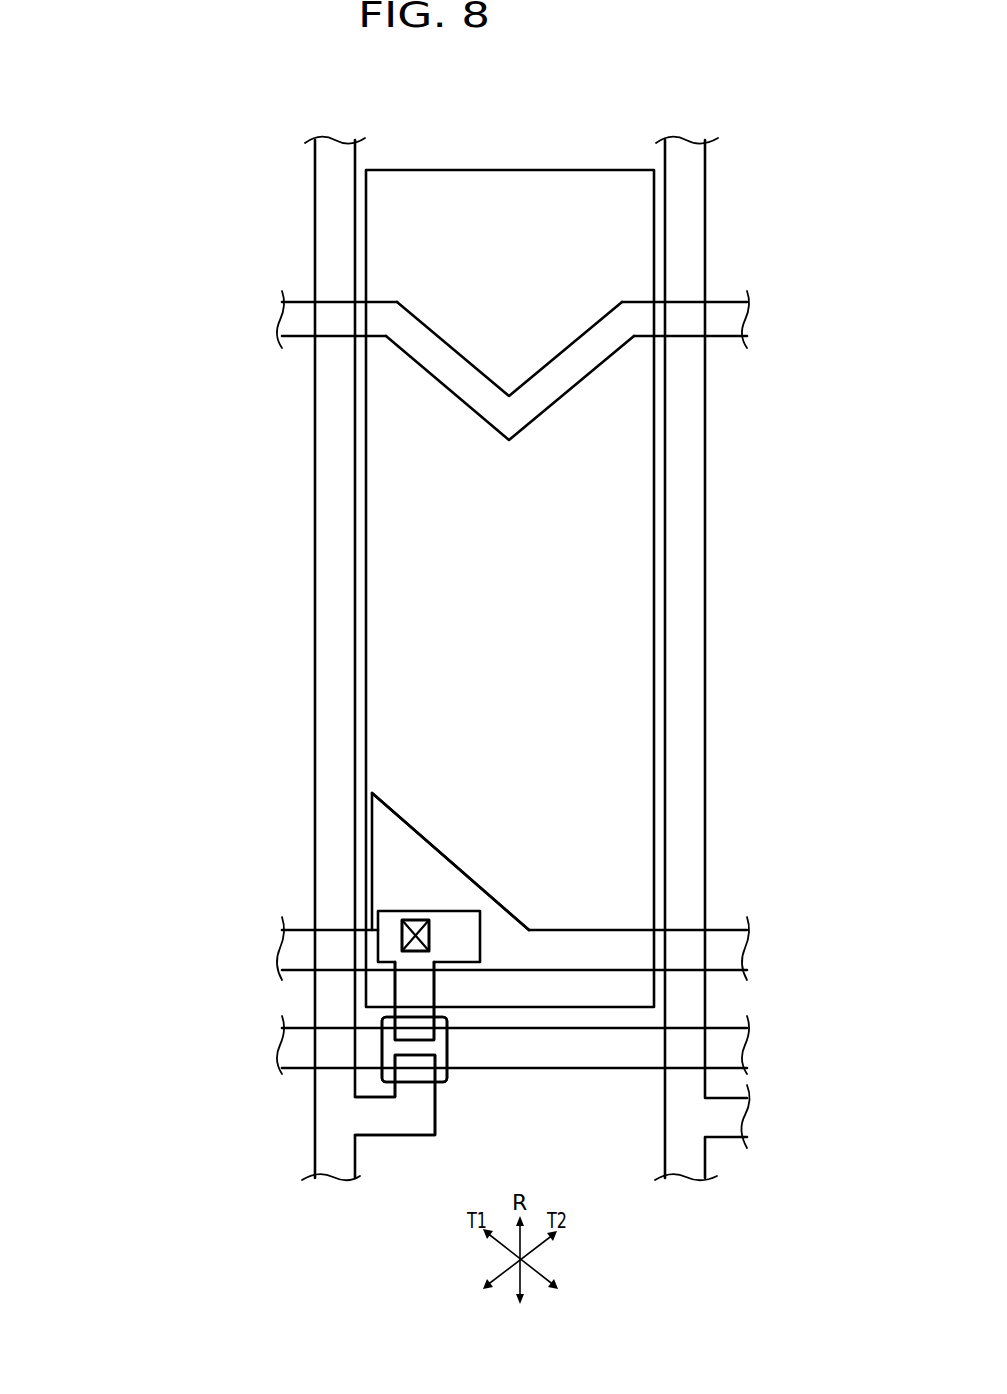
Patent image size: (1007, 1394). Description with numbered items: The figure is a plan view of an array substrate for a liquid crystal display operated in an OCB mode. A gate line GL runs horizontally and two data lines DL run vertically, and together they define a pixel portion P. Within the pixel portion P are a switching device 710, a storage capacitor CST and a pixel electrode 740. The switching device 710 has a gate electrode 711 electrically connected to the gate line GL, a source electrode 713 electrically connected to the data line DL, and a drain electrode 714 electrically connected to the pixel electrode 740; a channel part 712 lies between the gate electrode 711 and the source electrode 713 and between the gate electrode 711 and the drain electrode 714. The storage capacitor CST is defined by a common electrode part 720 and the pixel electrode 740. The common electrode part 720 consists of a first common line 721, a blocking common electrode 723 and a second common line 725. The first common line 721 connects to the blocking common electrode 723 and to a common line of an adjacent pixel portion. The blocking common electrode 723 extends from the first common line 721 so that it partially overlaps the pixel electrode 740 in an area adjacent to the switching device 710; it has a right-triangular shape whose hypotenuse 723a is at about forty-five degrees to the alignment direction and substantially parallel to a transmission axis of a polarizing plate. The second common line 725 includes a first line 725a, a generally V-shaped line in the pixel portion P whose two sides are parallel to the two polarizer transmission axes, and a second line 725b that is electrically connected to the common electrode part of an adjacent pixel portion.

The pixel electrode 740 is at (428, 239).
The storage capacitor CST is at (88, 668).
The common electrode part 720 is at (148, 345).
The second common line 725 is at (205, 312).
The first line 725a is at (462, 387).
The second line 725b is at (293, 318).
The blocking common electrode 723 is at (362, 916).
The hypotenuse 723a is at (467, 868).
The first common line 721 is at (292, 950).
The switching device 710 is at (215, 1038).
The gate electrode 711 is at (392, 1047).
The channel part 712 is at (382, 1072).
The source electrode 713 is at (402, 1085).
The drain electrode 714 is at (398, 1013).
The data line DL is at (330, 1172).
The gate line GL is at (735, 1047).
The pixel portion P is at (499, 556).